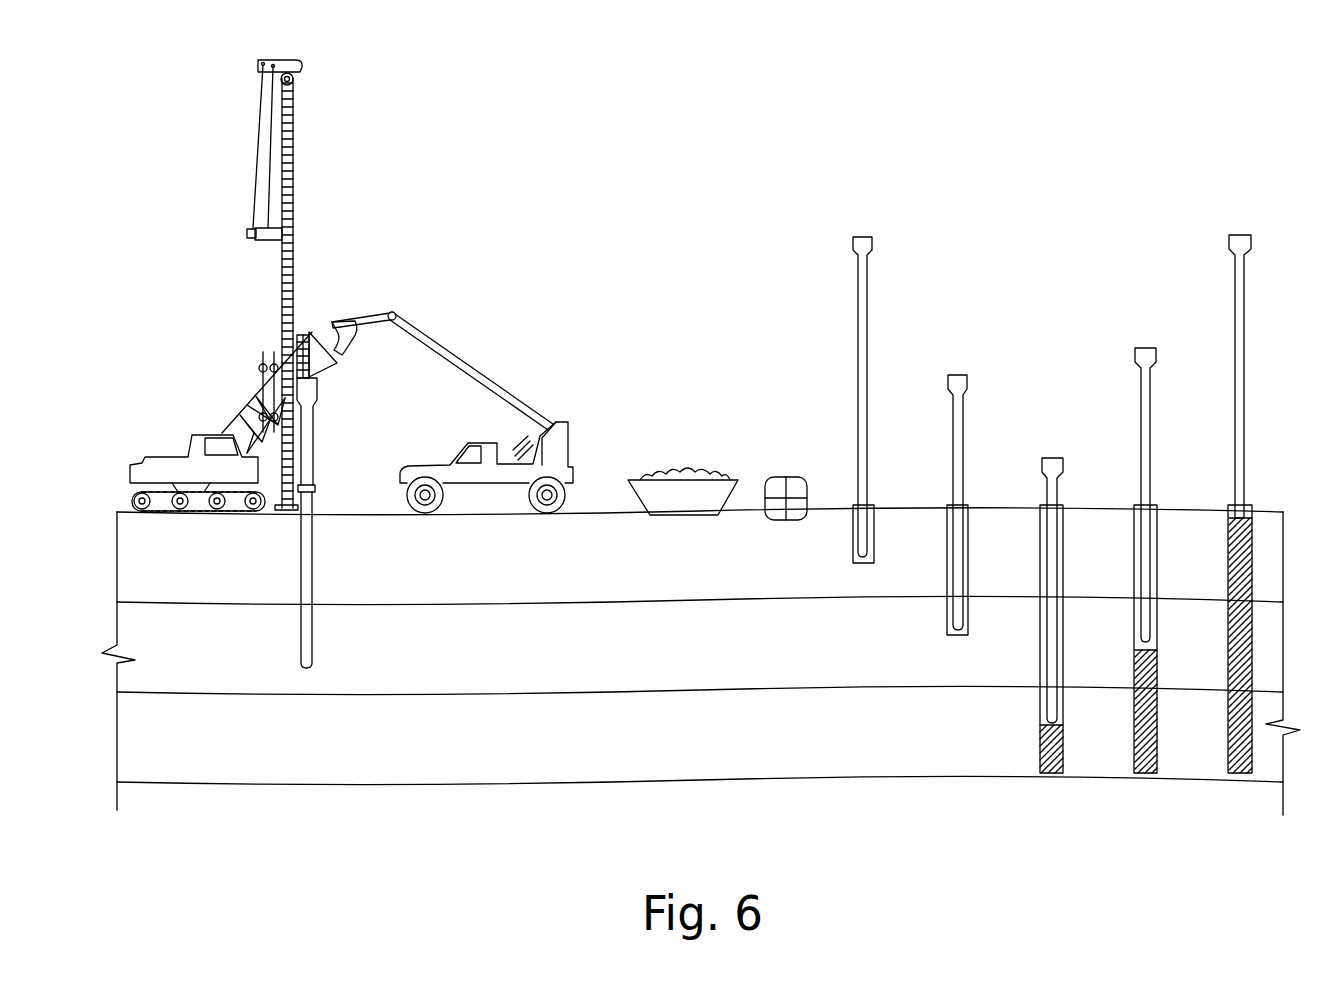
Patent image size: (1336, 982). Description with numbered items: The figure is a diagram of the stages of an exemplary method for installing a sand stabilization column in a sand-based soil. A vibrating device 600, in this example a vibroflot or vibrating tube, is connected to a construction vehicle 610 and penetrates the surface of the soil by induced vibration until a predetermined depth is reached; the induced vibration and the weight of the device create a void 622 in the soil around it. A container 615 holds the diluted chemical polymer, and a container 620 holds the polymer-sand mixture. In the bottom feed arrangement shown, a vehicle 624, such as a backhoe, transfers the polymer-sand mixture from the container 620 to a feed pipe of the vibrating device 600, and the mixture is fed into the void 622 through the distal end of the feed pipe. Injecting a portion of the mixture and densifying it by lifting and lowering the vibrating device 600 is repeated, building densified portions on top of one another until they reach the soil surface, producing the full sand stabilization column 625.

The vibrating device 600 is at (313, 472).
The construction vehicle 610 is at (200, 432).
The container for holding the diluted chemical polymer 615 is at (780, 478).
The container for holding the polymer-sand mixture 620 is at (675, 468).
The void 622 is at (852, 543).
The vehicle 624 is at (458, 452).
The full sand stabilization column 625 is at (1228, 523).